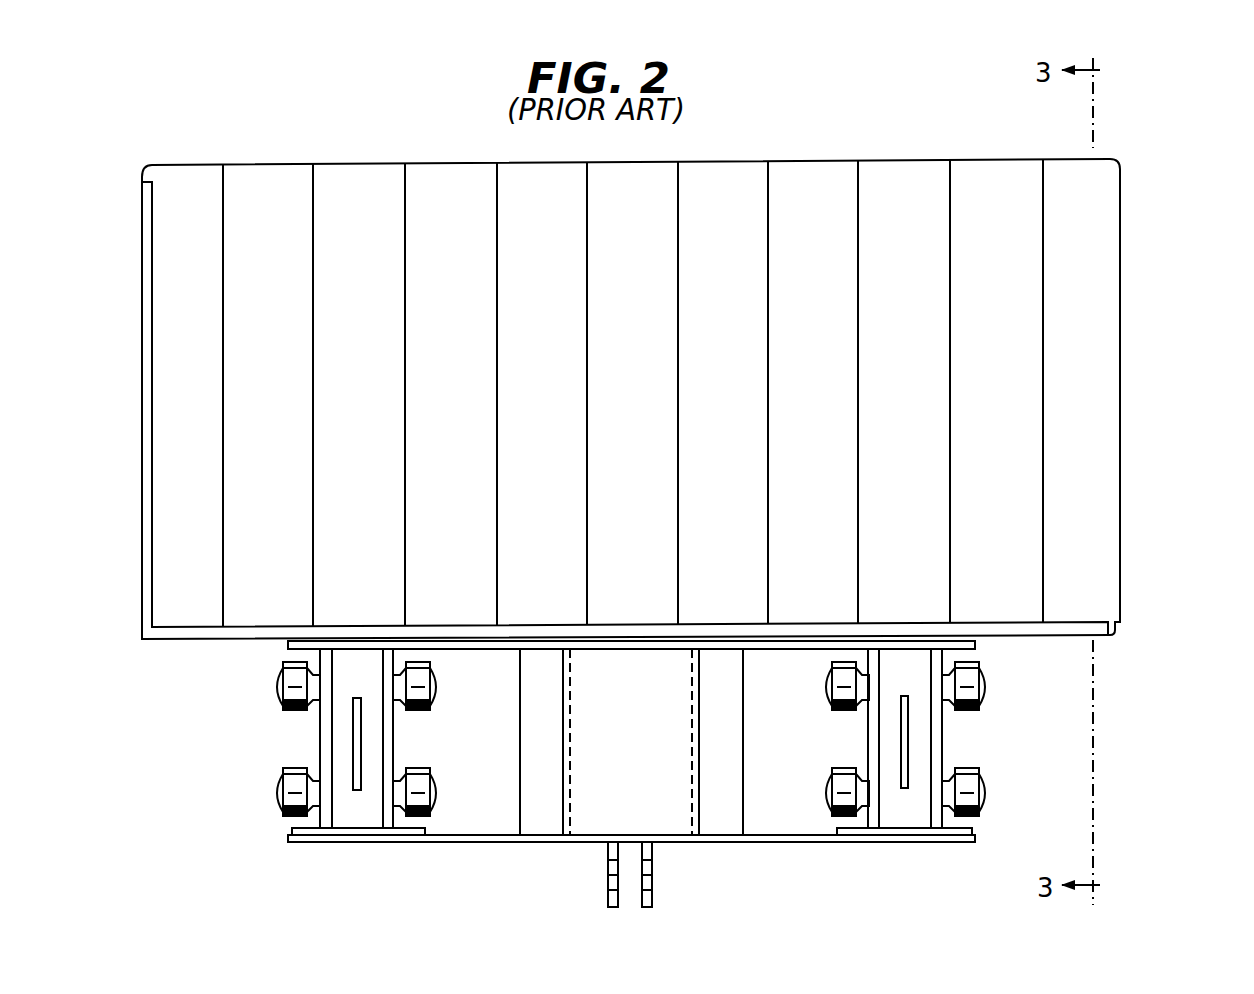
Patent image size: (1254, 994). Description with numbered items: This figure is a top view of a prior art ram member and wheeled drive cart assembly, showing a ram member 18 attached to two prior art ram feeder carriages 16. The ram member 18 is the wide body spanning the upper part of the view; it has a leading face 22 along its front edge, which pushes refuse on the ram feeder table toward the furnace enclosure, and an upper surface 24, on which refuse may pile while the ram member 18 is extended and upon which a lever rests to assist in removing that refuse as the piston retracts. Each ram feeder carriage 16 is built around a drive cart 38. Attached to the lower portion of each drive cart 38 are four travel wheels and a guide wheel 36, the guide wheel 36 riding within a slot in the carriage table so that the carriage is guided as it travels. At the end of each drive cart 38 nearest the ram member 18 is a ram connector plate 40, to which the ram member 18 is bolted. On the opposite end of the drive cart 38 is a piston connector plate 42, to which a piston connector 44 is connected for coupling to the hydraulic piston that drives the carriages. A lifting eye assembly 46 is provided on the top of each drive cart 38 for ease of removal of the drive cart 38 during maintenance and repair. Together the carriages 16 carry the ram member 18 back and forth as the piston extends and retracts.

The ram feeder carriage 16 is at (633, 766).
The ram member 18 is at (676, 372).
The leading face 22 is at (930, 160).
The upper surface 24 is at (1102, 420).
The guide wheel 36 is at (283, 672).
The drive cart 38 is at (348, 808).
The ram connector plate 40 is at (290, 649).
The piston connector plate 42 is at (292, 832).
The piston connector 44 is at (510, 843).
The lifting eye assembly 46 is at (355, 745).